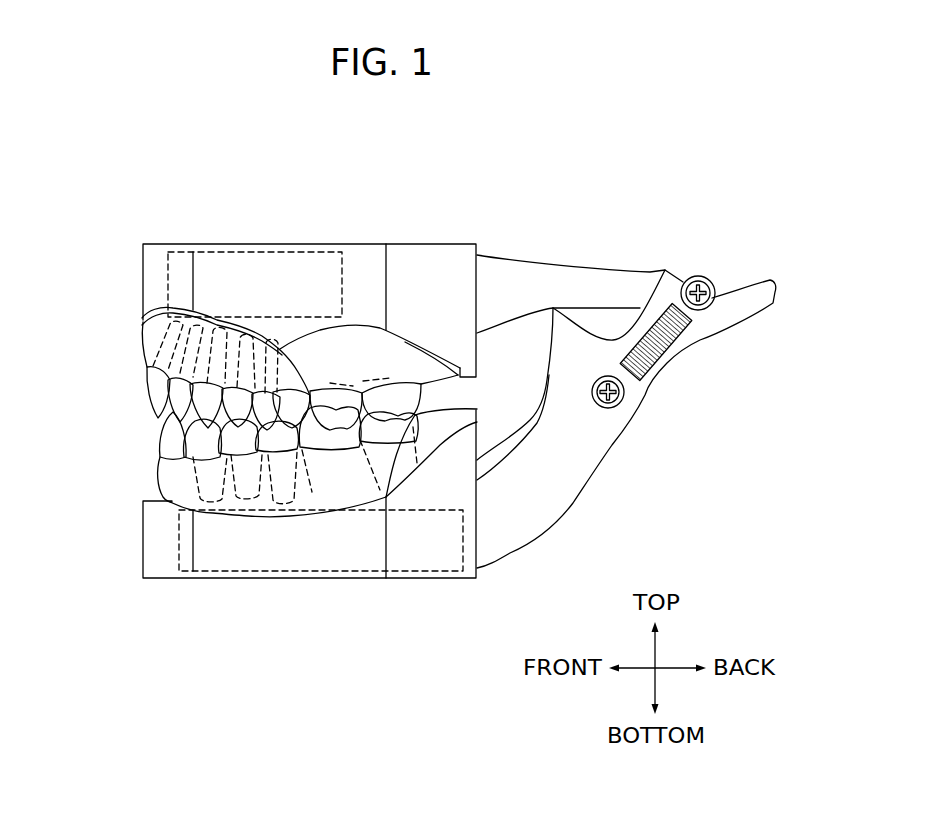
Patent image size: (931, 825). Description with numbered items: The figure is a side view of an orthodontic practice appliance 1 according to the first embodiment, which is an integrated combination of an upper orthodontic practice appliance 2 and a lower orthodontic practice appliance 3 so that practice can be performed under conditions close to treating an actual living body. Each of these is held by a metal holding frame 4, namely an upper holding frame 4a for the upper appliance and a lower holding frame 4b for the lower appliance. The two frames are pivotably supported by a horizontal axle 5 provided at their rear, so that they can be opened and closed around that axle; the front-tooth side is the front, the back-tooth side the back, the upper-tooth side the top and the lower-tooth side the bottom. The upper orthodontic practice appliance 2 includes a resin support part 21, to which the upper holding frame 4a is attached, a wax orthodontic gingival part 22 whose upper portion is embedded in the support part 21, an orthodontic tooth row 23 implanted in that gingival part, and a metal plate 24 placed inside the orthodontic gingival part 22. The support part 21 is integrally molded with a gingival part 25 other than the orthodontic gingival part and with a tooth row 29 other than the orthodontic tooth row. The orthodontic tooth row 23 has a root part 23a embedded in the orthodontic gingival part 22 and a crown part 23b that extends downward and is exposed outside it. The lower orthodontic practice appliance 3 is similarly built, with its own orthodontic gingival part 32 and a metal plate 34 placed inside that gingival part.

The orthodontic practice appliance 1 is at (84, 170).
The upper orthodontic practice appliance 2 is at (125, 271).
The lower orthodontic practice appliance 3 is at (125, 532).
The holding frame 4 is at (626, 379).
The upper holding frame 4a is at (580, 280).
The lower holding frame 4b is at (607, 443).
The horizontal axle 5 is at (697, 290).
The support part 21 is at (358, 270).
The orthodontic gingival part 22 is at (152, 330).
The orthodontic tooth row 23 is at (220, 338).
The root part 23a is at (256, 326).
The crown part 23b is at (156, 390).
The metal plate 24 is at (283, 274).
The gingival part 25 is at (400, 360).
The tooth row 29 is at (397, 405).
The orthodontic gingival part 32 is at (318, 492).
The metal plate 34 is at (237, 556).